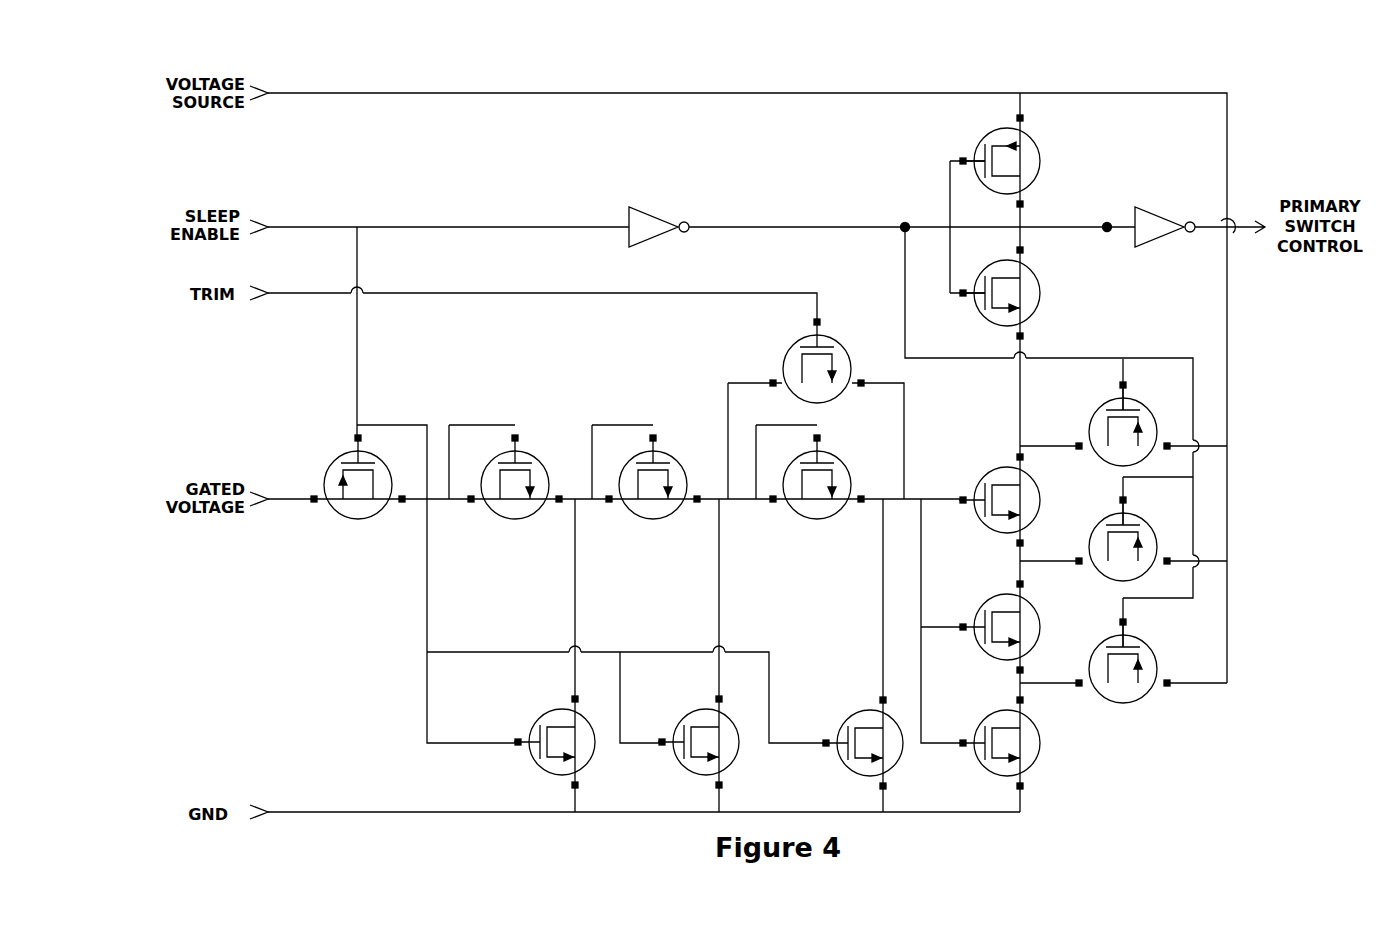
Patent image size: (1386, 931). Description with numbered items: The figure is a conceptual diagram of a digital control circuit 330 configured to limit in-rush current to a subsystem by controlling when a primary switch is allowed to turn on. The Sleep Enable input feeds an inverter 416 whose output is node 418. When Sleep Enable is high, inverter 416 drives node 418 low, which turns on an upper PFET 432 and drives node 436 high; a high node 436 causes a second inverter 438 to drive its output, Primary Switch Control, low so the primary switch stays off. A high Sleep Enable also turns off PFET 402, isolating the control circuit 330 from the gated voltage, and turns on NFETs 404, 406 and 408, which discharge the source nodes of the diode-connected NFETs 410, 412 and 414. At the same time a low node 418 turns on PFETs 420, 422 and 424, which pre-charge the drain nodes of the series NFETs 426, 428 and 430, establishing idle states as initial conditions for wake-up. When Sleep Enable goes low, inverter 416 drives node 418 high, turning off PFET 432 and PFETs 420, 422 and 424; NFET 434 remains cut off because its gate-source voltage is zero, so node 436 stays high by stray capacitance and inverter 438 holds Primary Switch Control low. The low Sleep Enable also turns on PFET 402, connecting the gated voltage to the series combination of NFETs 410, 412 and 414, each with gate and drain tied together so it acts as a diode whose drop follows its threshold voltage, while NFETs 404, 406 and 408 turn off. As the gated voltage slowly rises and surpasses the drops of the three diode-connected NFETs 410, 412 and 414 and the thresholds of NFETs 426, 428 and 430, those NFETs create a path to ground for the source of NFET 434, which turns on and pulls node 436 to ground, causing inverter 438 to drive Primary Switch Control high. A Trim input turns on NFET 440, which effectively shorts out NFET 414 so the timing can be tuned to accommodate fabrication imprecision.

The digital control circuit 330 is at (768, 84).
The PFET 402 is at (358, 521).
The NFET 404 is at (540, 719).
The NFET 406 is at (684, 719).
The NFET 408 is at (848, 719).
The NFET 410 is at (515, 521).
The NFET 412 is at (653, 521).
The NFET 414 is at (817, 521).
The inverter 416 is at (649, 214).
The node 418 is at (903, 223).
The PFET 420 is at (1102, 645).
The PFET 422 is at (1102, 523).
The PFET 424 is at (1104, 408).
The NFET 426 is at (985, 719).
The NFET 428 is at (985, 603).
The NFET 430 is at (985, 476).
The PFET 432 is at (1035, 143).
The NFET 434 is at (1040, 293).
The node 436 is at (1105, 223).
The inverter 438 is at (1155, 214).
The NFET 440 is at (795, 346).